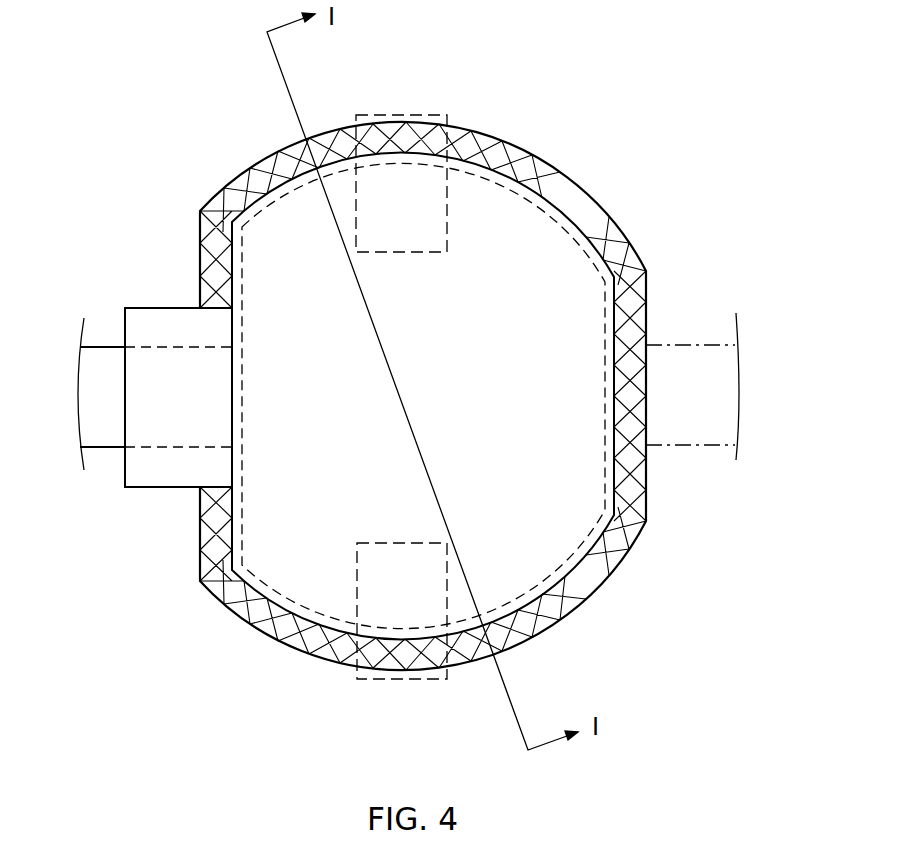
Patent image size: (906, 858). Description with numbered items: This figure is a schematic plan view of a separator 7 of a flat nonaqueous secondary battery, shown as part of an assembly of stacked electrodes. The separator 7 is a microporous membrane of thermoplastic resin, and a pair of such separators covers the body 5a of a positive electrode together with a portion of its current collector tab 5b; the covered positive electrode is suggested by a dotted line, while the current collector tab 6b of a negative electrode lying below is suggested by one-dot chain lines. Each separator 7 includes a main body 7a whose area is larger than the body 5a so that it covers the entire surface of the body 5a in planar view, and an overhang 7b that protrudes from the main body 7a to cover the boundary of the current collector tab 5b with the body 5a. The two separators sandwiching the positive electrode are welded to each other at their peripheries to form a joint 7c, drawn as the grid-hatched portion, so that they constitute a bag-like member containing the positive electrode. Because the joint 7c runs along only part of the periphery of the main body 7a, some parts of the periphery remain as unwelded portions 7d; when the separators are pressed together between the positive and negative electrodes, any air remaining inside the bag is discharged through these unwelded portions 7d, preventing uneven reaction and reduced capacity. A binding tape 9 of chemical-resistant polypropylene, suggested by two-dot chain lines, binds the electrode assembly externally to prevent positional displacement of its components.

The body 5a is at (297, 260).
The current collector tab 5b is at (105, 358).
The current collector tab 6b is at (675, 360).
The separator 7 is at (423, 361).
The main body 7a is at (553, 478).
The overhang 7b is at (165, 433).
The joint 7c is at (545, 185).
The unwelded portion 7d is at (595, 218).
The binding tape 9 is at (418, 118).